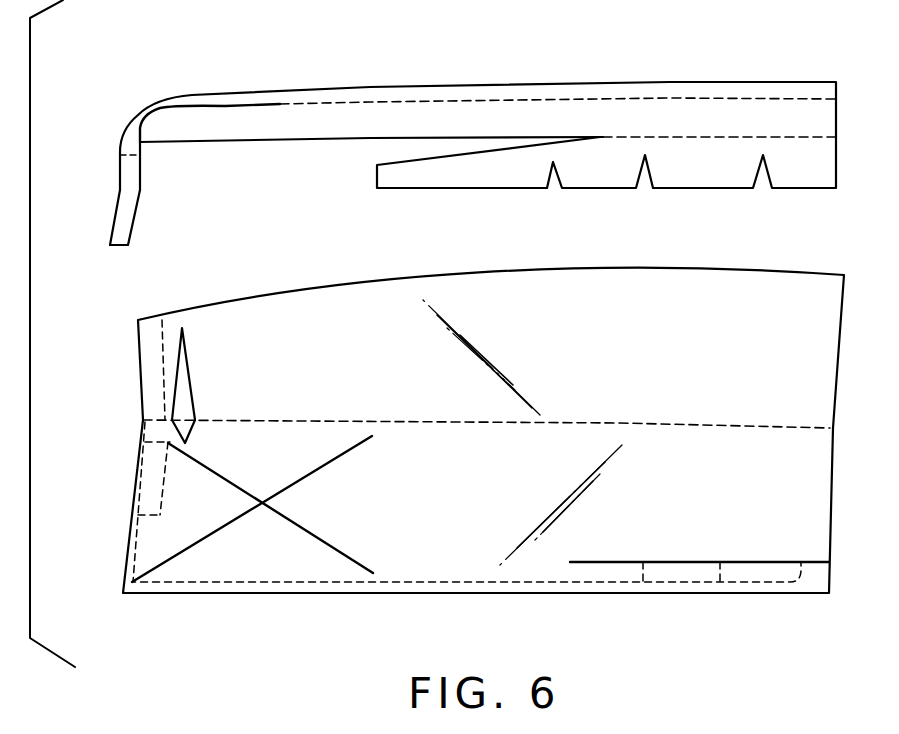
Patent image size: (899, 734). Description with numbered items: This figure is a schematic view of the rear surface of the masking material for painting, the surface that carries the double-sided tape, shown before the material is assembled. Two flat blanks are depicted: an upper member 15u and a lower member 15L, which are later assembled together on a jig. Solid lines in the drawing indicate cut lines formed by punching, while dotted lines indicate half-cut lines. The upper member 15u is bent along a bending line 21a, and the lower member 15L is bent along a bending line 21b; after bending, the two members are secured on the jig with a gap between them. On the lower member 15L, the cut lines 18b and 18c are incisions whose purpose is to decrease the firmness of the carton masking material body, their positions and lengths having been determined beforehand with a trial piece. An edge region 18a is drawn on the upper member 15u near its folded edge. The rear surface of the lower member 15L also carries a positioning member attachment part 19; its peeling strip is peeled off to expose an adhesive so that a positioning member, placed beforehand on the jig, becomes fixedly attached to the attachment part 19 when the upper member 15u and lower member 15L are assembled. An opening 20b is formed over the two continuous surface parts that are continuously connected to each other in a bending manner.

The upper member 15u is at (780, 113).
The lower member 15L is at (460, 288).
The bent edge portion 18a is at (232, 107).
The cut line 18b is at (317, 533).
The cut line 18c is at (778, 562).
The positioning member attachment part 19 is at (152, 487).
The opening 20b is at (183, 393).
The bending line 21a is at (688, 135).
The bending line 21b is at (677, 422).